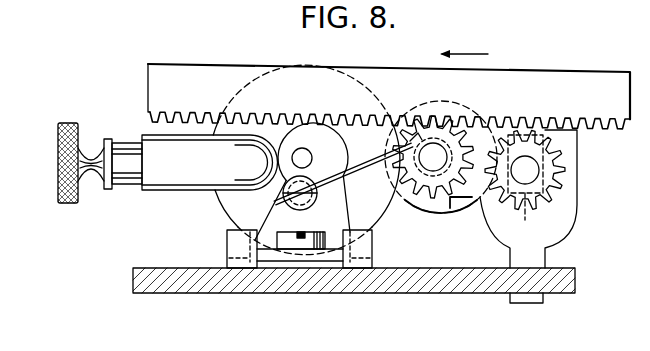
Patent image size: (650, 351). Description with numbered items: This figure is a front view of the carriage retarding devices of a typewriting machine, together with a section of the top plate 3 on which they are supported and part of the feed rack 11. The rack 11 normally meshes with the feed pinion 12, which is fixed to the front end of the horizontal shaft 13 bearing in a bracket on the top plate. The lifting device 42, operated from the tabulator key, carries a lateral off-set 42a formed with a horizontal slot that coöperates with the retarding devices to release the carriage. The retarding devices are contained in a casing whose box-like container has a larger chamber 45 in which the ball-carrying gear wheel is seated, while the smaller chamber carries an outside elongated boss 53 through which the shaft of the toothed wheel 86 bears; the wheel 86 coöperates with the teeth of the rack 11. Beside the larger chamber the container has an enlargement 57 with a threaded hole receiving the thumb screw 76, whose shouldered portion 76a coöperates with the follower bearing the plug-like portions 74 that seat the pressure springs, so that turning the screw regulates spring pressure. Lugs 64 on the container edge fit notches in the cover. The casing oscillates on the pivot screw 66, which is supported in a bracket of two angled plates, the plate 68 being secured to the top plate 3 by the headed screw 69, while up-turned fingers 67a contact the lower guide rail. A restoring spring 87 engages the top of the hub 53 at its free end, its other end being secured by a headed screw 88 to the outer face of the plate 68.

The top plate 3 is at (142, 271).
The feed rack 11 is at (533, 78).
The feed pinion 12 is at (569, 161).
The horizontal shaft 13 is at (528, 199).
The lifting device 42 is at (522, 305).
The lateral off-set 42a is at (451, 200).
The larger chamber 45 is at (290, 300).
The outside elongated boss 53 is at (420, 222).
The enlargement 57 is at (180, 182).
The lugs 64 is at (339, 291).
The pivot screw 66 is at (303, 150).
The up-turned fingers 67a is at (382, 245).
The angled plate 68 is at (270, 200).
The headed screw 69 is at (310, 240).
The plug-like portions 74 is at (138, 165).
The thumb screw 76 is at (58, 163).
The shouldered portion 76a is at (108, 139).
The toothed wheel 86 is at (462, 140).
The restoring spring 87 is at (368, 176).
The headed screw 88 is at (289, 204).